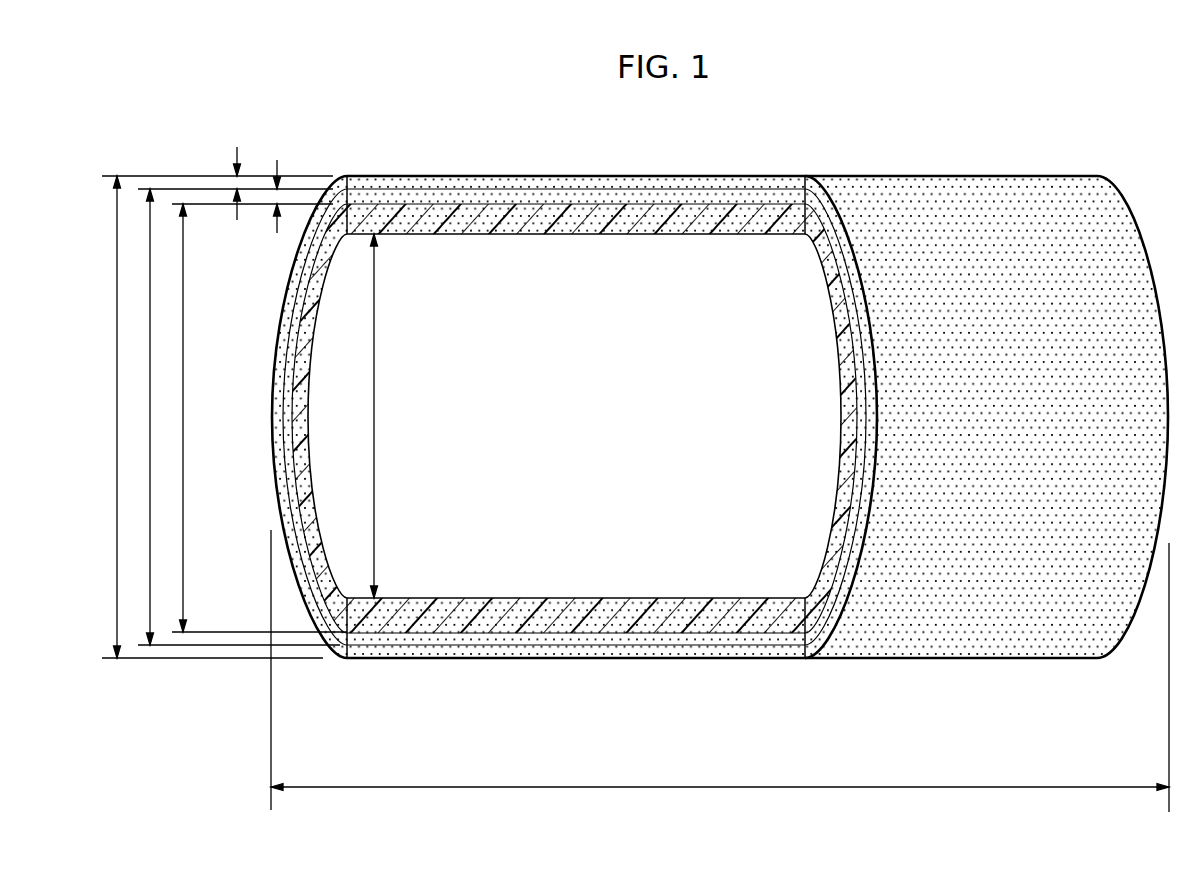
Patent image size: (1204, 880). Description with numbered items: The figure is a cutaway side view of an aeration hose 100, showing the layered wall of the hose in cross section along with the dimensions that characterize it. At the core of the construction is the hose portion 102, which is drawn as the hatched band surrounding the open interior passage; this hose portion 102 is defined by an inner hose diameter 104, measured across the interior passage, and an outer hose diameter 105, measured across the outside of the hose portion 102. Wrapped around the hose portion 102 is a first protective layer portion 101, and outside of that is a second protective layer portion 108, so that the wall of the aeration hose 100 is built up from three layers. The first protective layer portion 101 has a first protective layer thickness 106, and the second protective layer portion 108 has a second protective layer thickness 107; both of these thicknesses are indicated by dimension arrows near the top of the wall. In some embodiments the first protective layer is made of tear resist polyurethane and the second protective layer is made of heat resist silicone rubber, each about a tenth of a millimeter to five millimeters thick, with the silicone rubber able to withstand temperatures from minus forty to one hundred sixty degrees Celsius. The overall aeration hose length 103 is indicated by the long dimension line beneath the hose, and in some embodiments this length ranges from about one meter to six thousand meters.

The aeration hose 100 is at (466, 122).
The first protective layer portion 101 is at (577, 191).
The hose portion 102 is at (509, 214).
The aeration hose length 103 is at (622, 787).
The inner hose diameter 104 is at (373, 400).
The outer hose diameter 105 is at (184, 394).
The first protective layer thickness 106 is at (278, 199).
The second protective layer thickness 107 is at (225, 183).
The second protective layer portion 108 is at (650, 186).